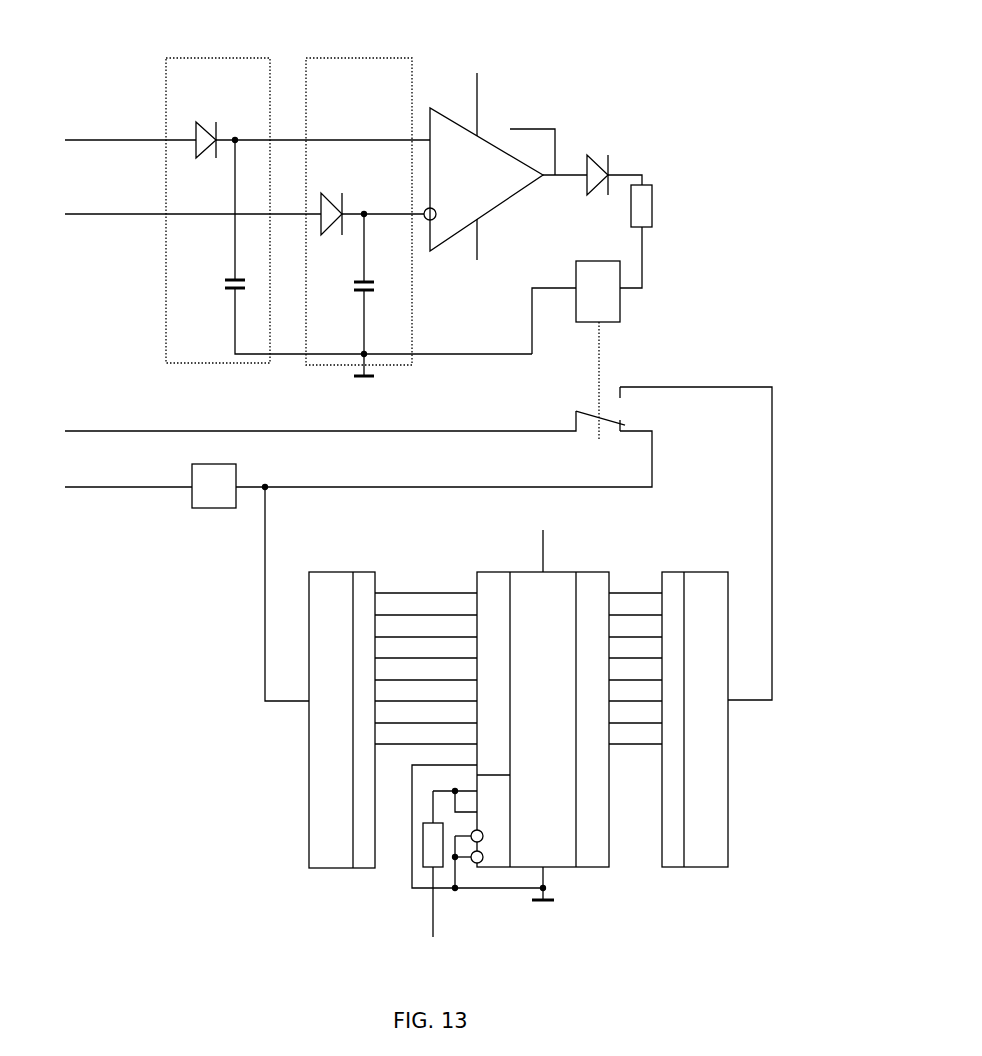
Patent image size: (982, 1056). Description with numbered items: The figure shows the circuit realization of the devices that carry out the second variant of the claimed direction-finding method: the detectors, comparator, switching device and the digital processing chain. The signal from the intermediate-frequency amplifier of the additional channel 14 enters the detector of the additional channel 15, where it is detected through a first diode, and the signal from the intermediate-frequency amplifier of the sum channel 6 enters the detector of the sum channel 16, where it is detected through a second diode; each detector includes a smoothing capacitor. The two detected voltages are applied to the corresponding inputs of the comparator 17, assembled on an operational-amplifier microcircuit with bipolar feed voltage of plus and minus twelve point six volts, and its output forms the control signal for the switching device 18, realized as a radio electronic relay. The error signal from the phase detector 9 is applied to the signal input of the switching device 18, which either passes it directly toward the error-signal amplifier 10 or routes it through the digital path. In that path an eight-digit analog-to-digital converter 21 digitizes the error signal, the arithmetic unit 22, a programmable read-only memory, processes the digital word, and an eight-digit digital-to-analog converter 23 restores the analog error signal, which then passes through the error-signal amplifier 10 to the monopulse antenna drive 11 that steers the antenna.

The intermediate-frequency amplifier of the sum channel 6 is at (244, 206).
The phase detector 9 is at (418, 543).
The error-signal amplifier 10 is at (250, 582).
The monopulse antenna drive 11 is at (128, 479).
The intermediate-frequency amplifier of the additional channel 14 is at (247, 132).
The detector of the additional channel 15 is at (265, 210).
The detector of the sum channel 16 is at (419, 217).
The comparator 17 is at (550, 174).
The switching device 18 is at (576, 350).
The analog-to-digital converter 21 is at (695, 719).
The arithmetic unit 22 is at (518, 733).
The digital-to-analog converter 23 is at (342, 720).